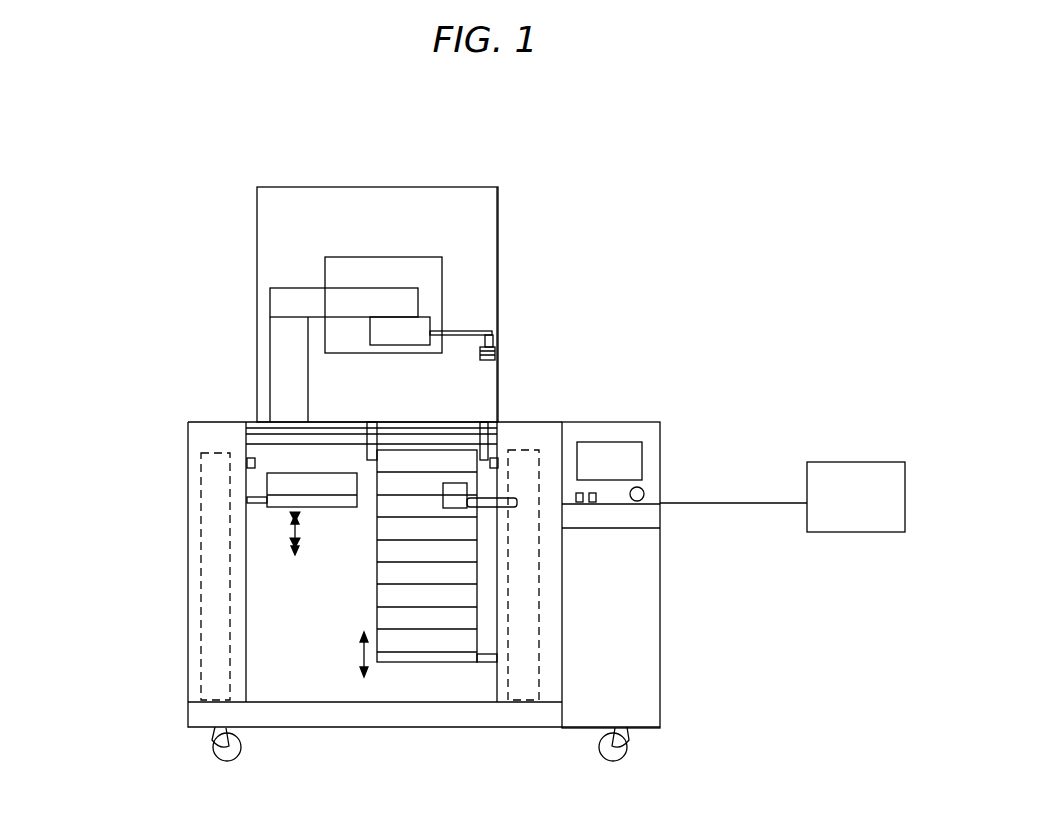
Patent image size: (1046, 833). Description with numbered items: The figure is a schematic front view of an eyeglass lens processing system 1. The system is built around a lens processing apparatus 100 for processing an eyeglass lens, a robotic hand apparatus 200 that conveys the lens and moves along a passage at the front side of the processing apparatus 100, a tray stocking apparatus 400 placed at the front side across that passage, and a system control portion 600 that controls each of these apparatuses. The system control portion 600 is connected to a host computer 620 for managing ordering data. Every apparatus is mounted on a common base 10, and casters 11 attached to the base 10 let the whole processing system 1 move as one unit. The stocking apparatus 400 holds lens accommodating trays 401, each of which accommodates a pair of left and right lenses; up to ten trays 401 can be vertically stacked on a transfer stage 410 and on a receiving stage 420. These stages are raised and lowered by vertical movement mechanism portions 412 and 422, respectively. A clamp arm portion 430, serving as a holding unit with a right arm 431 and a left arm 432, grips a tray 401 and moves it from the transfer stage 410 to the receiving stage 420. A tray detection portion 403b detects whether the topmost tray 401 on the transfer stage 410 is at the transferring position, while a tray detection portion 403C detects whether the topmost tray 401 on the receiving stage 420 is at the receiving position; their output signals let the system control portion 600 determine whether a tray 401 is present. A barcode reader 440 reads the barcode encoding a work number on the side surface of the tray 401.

The processing system 1 is at (542, 251).
The base 10 is at (212, 714).
The casters 11 is at (213, 743).
The lens processing apparatus 100 is at (378, 186).
The robotic hand apparatus 200 is at (281, 271).
The tray stocking apparatus 400 is at (153, 479).
The lens accommodating tray 401 is at (293, 483).
The tray detection portion 403C is at (247, 463).
The tray detection portion 403b is at (498, 462).
The transfer stage 410 is at (433, 660).
The vertical movement mechanism portion 412 is at (540, 642).
The receiving stage 420 is at (270, 507).
The vertical movement mechanism portion 422 is at (202, 602).
The clamp arm portion 430 is at (594, 330).
The right arm 431 is at (494, 422).
The left arm 432 is at (378, 422).
The barcode reader 440 is at (455, 507).
The system control portion 600 is at (653, 443).
The host computer 620 is at (858, 462).